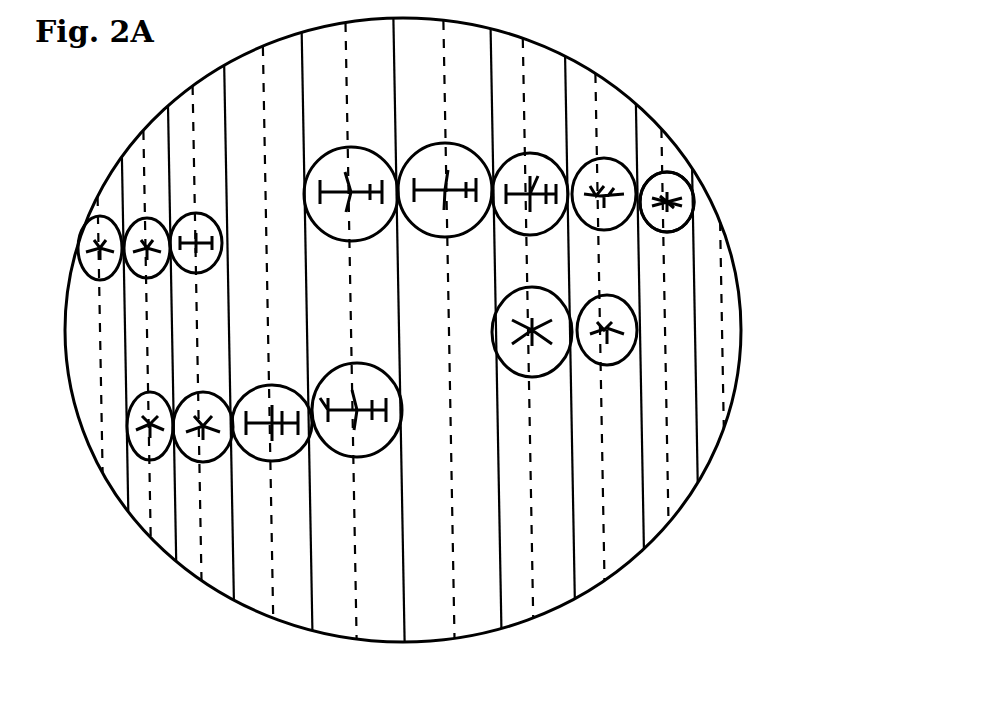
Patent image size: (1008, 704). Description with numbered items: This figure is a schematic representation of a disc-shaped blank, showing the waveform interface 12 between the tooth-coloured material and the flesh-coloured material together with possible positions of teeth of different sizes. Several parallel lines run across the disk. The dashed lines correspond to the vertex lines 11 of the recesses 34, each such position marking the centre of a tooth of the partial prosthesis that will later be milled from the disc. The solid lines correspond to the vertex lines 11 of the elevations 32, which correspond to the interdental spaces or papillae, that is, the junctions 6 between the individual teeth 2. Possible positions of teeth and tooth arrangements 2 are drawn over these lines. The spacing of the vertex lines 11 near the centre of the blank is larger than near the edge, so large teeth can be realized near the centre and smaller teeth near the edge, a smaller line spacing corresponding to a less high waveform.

The teeth 2 is at (690, 217).
The junctions between the individual teeth 6 is at (640, 180).
The vertex lines 11 is at (307, 563).
The interface 12 is at (481, 348).
The elevations 32 is at (643, 412).
The recesses 34 is at (667, 337).